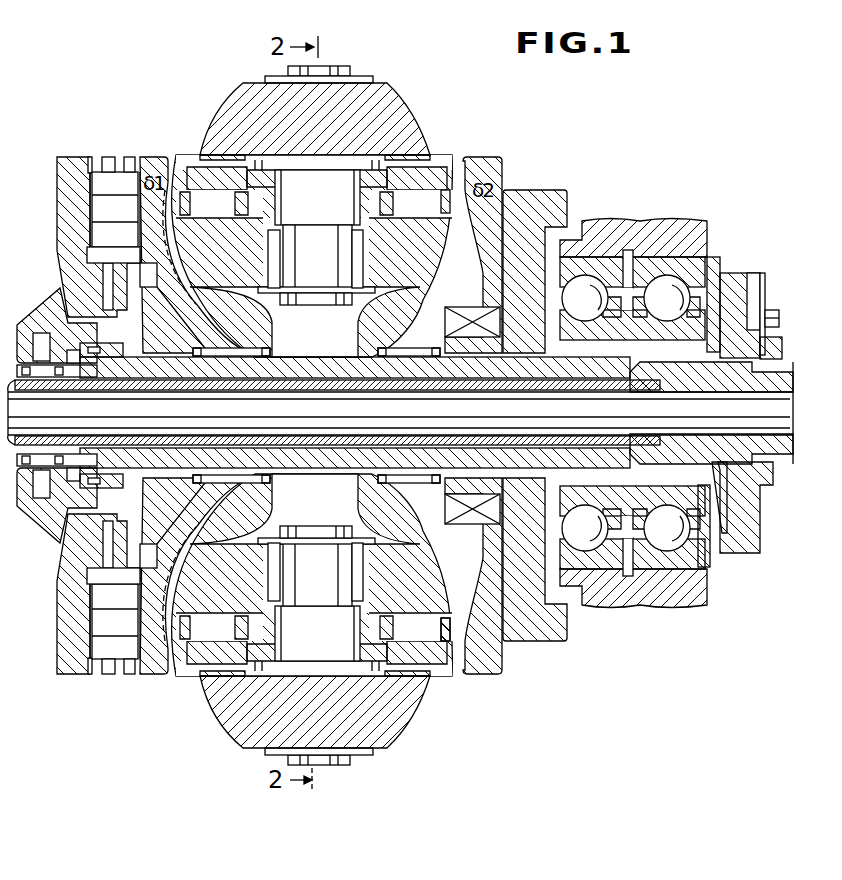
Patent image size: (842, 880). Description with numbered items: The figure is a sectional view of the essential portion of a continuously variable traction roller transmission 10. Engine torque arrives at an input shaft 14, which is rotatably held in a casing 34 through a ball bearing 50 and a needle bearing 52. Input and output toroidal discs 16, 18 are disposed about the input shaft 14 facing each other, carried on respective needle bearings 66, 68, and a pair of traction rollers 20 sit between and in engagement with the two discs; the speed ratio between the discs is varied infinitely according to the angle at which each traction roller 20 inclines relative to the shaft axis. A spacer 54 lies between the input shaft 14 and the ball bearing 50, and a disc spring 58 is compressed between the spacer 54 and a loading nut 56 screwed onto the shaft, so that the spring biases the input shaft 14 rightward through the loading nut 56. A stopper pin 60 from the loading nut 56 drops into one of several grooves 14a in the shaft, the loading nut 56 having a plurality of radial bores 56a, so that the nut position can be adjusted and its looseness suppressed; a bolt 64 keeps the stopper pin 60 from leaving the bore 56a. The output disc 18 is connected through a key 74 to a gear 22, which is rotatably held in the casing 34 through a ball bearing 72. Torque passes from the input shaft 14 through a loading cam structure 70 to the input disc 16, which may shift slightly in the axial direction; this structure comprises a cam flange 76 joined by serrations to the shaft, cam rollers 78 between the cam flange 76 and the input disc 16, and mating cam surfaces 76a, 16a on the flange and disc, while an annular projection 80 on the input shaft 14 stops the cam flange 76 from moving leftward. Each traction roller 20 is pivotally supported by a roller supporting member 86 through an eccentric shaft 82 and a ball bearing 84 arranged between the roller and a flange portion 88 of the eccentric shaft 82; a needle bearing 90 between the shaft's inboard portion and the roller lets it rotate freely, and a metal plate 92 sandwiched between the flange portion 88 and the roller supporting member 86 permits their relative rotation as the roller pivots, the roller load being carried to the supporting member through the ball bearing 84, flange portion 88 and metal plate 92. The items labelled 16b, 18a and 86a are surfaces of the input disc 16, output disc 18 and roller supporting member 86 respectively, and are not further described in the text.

The continuously variable traction roller transmission 10 is at (707, 147).
The input shaft 14 is at (790, 385).
The groove 14a is at (762, 372).
The input toroidal disc 16 is at (158, 148).
The cam surface 16a is at (152, 156).
The housing spherical seat surface 16b is at (172, 195).
The output toroidal disc 18 is at (492, 152).
The retaining ring inner face 18a is at (462, 160).
The traction roller 20 is at (403, 212).
The gear 22 is at (541, 190).
The casing 34 is at (634, 228).
The ball bearing 50 is at (668, 290).
The needle bearing 52 is at (50, 322).
The spacer 54 is at (714, 265).
The loading nut 56 is at (774, 480).
The radial bore 56a is at (766, 280).
The disc spring 58 is at (748, 280).
The stopper pin 60 is at (782, 348).
The bolt 64 is at (780, 318).
The needle bearing 66 is at (268, 325).
The needle bearing 68 is at (364, 322).
The loading cam structure 70 is at (99, 110).
The ball bearing 72 is at (587, 292).
The key 74 is at (472, 495).
The cam flange 76 is at (70, 160).
The cam surface 76a is at (92, 160).
The cam roller 78 is at (112, 172).
The annular projection 80 is at (137, 358).
The eccentric shaft 82 is at (312, 178).
The ball bearing 84 is at (446, 642).
The roller supporting member 86 is at (397, 125).
The hub plate 86a is at (213, 158).
The flange portion 88 is at (450, 188).
The needle bearing 90 is at (352, 260).
The metal plate 92 is at (428, 160).